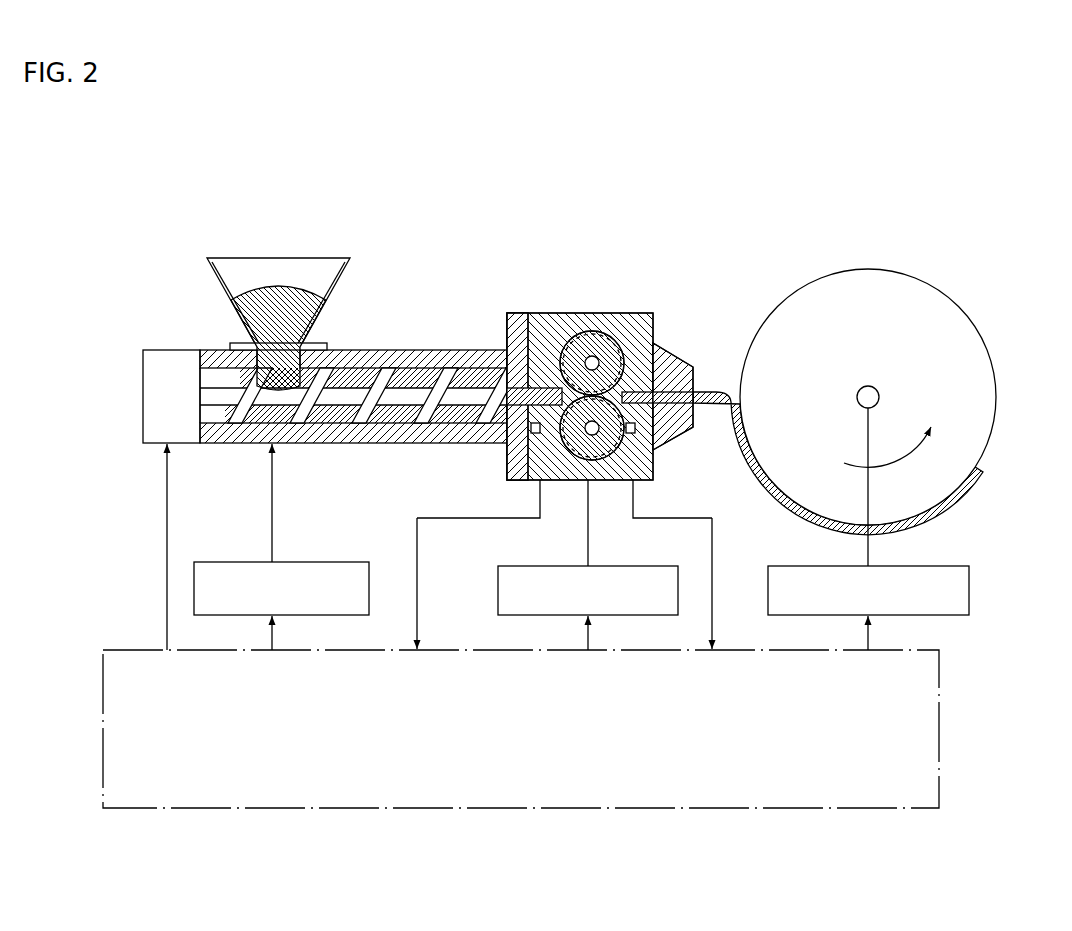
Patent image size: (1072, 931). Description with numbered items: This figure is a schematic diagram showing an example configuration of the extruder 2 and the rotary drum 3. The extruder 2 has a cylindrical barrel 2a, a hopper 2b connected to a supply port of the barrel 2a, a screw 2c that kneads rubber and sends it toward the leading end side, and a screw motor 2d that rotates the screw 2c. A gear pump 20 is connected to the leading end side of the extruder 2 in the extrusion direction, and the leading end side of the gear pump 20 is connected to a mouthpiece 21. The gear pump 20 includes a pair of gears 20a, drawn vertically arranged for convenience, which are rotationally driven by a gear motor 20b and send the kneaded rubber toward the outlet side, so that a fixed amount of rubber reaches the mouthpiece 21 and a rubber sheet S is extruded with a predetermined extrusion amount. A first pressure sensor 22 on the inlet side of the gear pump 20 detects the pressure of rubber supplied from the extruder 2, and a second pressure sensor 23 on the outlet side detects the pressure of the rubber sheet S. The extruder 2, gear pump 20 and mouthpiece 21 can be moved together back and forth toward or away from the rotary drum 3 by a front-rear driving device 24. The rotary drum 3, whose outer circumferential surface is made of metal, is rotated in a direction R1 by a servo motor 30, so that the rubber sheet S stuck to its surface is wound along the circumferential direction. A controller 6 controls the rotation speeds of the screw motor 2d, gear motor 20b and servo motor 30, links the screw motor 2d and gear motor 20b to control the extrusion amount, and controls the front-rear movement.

The extruder 2 is at (406, 258).
The cylindrical barrel 2a is at (447, 350).
The hopper 2b is at (260, 258).
The screw 2c is at (352, 392).
The screw motor 2d is at (160, 350).
The gear pump 20 is at (625, 313).
The pair of gears 20a is at (598, 331).
The gear motor 20b is at (550, 566).
The mouthpiece 21 is at (695, 367).
The first pressure sensor 22 is at (533, 447).
The second pressure sensor 23 is at (653, 455).
The front-rear driving device 24 is at (237, 562).
The rotary drum 3 is at (965, 314).
The servo motor 30 is at (969, 592).
The controller 6 is at (939, 712).
The rubber sheet S is at (707, 392).
The rotation direction R1 is at (873, 447).